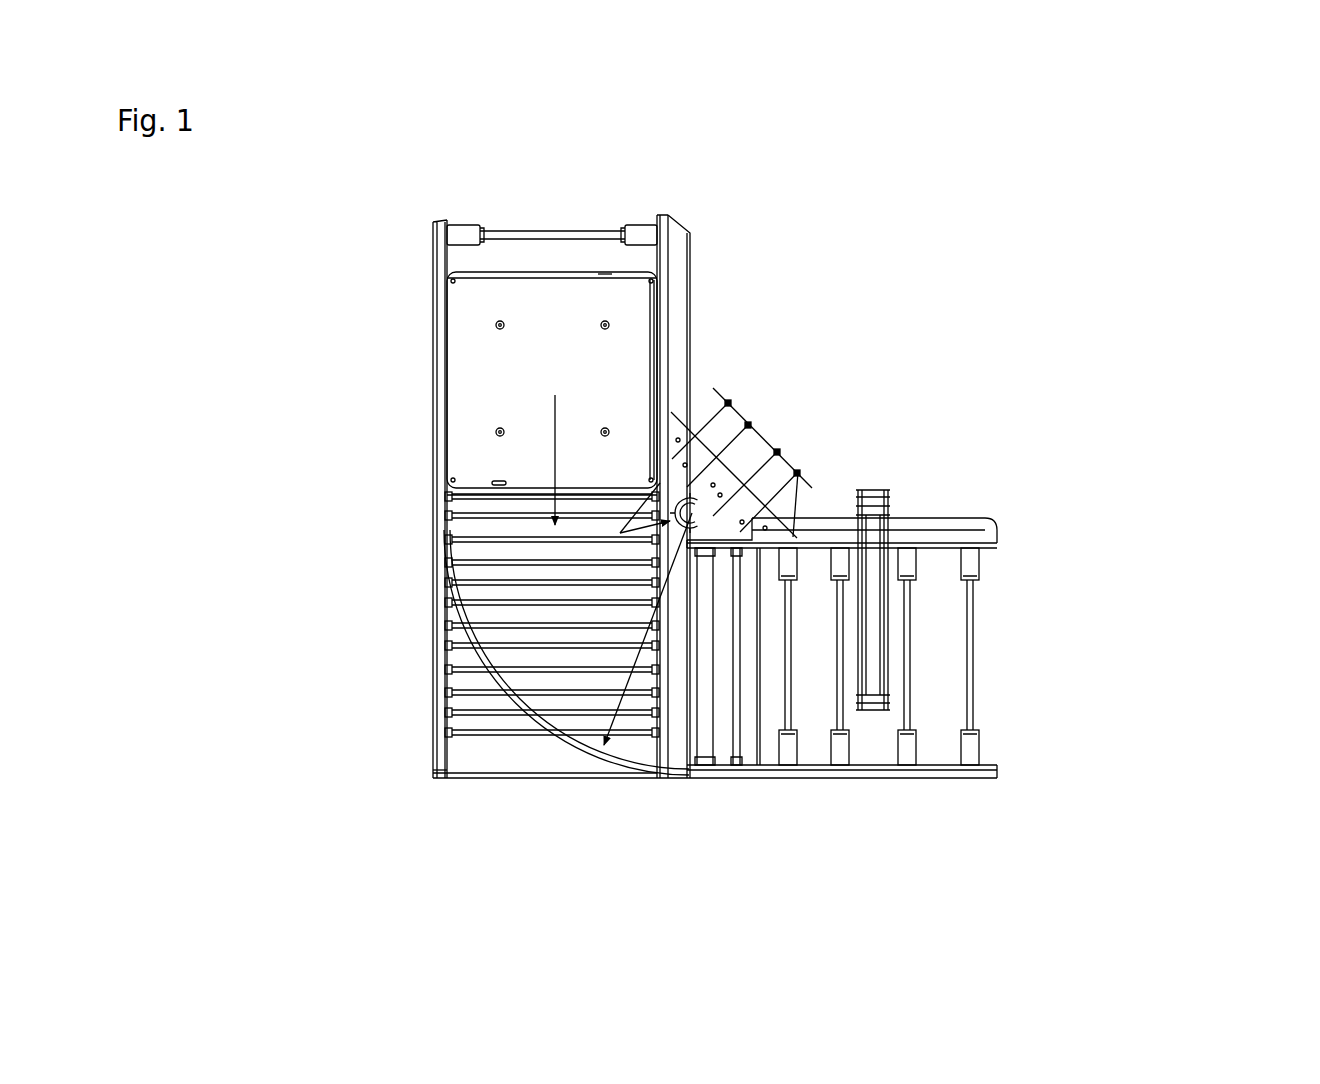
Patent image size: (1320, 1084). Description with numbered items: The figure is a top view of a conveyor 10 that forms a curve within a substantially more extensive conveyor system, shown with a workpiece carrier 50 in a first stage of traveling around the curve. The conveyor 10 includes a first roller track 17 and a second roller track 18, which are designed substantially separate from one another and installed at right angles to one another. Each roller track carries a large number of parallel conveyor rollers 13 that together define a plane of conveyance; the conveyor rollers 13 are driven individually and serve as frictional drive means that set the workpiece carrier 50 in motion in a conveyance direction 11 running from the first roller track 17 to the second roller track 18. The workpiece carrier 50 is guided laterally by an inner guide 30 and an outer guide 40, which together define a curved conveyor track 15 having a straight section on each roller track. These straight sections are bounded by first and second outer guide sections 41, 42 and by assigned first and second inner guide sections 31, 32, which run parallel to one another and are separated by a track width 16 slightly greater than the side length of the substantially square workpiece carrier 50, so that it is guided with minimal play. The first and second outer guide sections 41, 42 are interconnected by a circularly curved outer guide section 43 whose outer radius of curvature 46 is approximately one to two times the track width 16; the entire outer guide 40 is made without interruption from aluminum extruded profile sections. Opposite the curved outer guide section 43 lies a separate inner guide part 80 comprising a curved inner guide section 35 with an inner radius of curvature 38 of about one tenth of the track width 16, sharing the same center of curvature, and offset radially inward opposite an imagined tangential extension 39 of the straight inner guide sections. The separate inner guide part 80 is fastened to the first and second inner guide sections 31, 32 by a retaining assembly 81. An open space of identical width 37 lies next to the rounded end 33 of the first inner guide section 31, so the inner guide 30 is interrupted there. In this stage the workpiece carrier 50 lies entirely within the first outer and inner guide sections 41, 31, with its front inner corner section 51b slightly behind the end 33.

The conveyor 10 is at (1193, 201).
The conveyance direction 11 is at (465, 410).
The conveyor rollers 13 is at (497, 632).
The curved conveyor track 15 is at (520, 255).
The track width 16 is at (1000, 548).
The first roller track 17 is at (512, 545).
The second roller track 18 is at (925, 697).
The inner guide 30 is at (667, 248).
The first inner guide section 31 is at (663, 277).
The second inner guide section 32 is at (953, 540).
The rounded end of first straight inner guide section 33 is at (462, 381).
The curved inner guide section 35 is at (540, 673).
The width of open space 37 is at (770, 430).
The inner radius of curvature 38 is at (497, 575).
The imagined tangential extension 39 is at (445, 712).
The outer guide 40 is at (437, 312).
The first outer guide section 41 is at (437, 352).
The second outer guide section 42 is at (950, 772).
The curved outer guide section 43 is at (553, 733).
The outer radius of curvature 46 is at (690, 517).
The workpiece carrier 50 is at (560, 327).
The front inner corner section 51b is at (655, 483).
The separate inner guide part 80 is at (720, 532).
The retaining assembly 81 is at (745, 510).